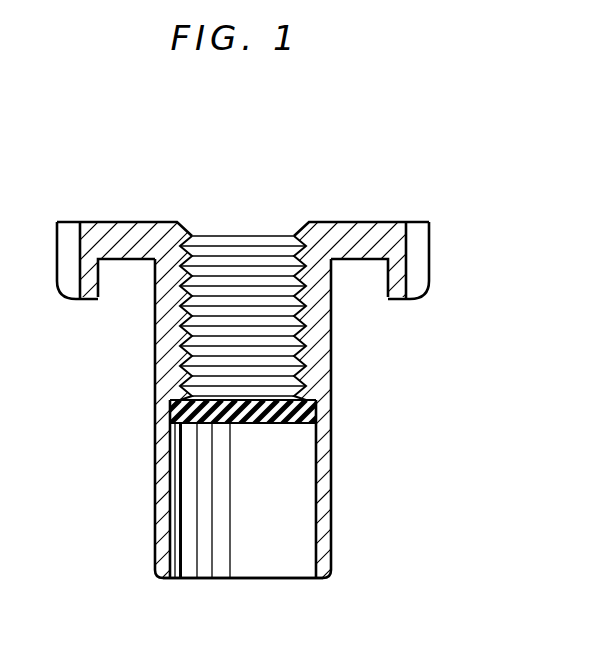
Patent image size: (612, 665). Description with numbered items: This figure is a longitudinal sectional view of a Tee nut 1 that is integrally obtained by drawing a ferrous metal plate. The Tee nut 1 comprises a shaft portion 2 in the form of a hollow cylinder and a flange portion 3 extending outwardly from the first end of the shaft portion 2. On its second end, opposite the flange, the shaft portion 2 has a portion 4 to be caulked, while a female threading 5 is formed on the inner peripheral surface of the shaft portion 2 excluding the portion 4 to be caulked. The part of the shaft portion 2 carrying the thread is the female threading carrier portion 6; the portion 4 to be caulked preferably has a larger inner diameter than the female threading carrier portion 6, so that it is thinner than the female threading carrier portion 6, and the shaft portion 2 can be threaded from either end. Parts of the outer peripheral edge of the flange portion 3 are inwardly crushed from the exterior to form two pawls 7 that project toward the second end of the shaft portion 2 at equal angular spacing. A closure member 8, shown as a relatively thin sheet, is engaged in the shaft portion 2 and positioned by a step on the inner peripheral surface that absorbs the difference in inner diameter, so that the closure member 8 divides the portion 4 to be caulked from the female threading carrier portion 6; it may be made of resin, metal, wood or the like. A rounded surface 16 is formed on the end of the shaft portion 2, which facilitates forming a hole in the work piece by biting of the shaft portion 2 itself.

The Tee nut 1 is at (343, 155).
The shaft portion 2 is at (155, 425).
The flange portion 3 is at (140, 222).
The portion to be caulked 4 is at (332, 512).
The female threading 5 is at (252, 262).
The female threading carrier portion 6 is at (332, 343).
The pawl 7 is at (83, 284).
The closure member 8 is at (237, 427).
The rounded surface 16 is at (162, 572).